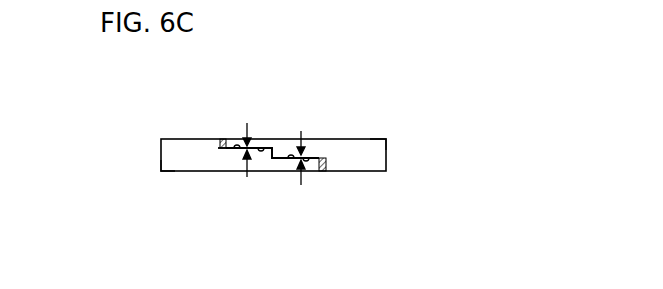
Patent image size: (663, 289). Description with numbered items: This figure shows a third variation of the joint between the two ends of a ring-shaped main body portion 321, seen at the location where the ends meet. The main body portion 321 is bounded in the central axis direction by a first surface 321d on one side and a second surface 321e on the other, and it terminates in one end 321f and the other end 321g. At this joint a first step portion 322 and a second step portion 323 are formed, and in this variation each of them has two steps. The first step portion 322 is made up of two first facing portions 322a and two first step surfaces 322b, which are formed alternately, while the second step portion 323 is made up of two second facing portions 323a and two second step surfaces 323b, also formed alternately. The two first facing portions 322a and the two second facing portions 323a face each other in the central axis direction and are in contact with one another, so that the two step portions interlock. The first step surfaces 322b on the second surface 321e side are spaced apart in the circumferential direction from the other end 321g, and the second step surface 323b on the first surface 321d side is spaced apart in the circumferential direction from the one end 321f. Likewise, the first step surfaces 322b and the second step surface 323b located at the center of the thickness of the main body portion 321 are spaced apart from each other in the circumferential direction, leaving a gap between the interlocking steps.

The main body portion 321 is at (160, 138).
The first surface 321d is at (161, 172).
The second surface 321e is at (376, 139).
The one end 321f is at (323, 172).
The other end 321g is at (223, 138).
The first step portion 322 is at (217, 150).
The first facing portions 322a is at (240, 150).
The first step surfaces 322b is at (221, 150).
The second step portion 323 is at (330, 160).
The second facing portions 323a is at (259, 149).
The second step surfaces 323b is at (273, 146).